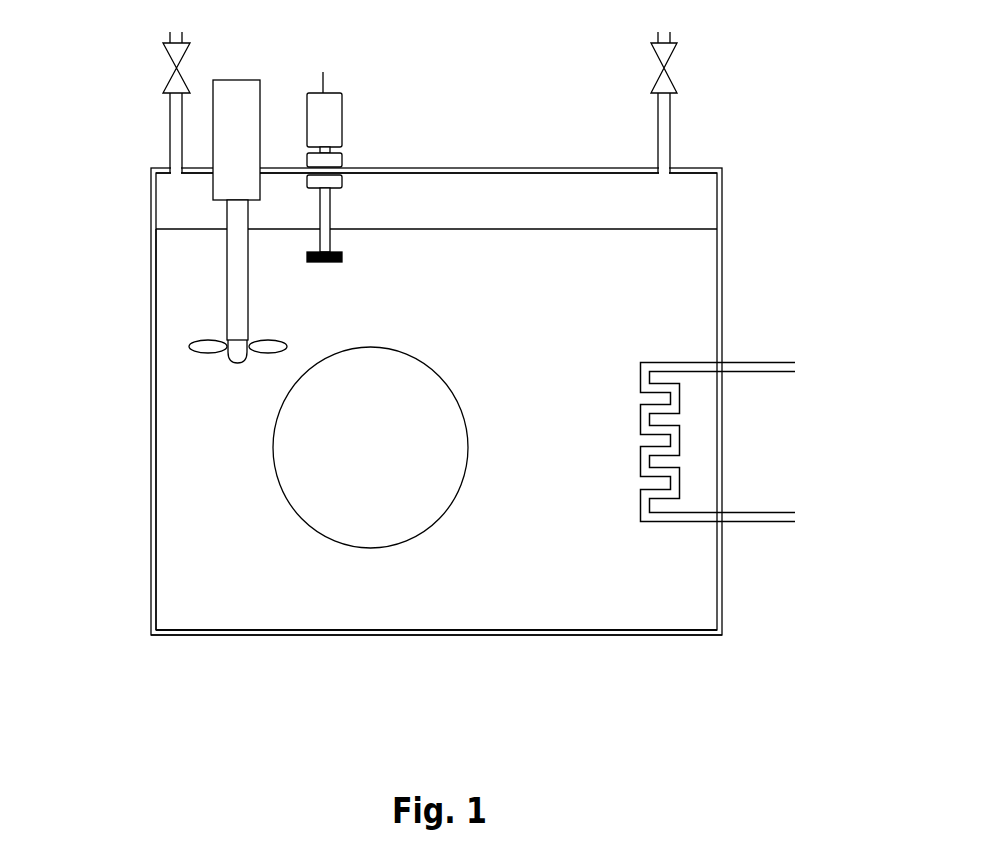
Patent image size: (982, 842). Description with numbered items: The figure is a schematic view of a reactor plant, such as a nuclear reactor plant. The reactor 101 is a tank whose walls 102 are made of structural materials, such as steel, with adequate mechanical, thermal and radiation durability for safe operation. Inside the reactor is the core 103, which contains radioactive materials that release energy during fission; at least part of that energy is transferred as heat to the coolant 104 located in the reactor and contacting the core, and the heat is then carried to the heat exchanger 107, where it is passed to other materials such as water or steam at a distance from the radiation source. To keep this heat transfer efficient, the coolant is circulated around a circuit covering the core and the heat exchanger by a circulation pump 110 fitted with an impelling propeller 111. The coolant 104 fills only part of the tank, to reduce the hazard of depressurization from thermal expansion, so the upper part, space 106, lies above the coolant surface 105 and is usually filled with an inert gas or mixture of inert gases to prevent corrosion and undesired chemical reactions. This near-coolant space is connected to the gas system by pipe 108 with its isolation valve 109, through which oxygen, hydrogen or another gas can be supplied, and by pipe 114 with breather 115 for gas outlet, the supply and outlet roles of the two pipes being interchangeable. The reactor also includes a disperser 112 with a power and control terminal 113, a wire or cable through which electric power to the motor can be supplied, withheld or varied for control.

The reactor 101 is at (733, 177).
The walls 102 is at (515, 633).
The core 103 is at (388, 482).
The coolant 104 is at (212, 417).
The surface 105 is at (188, 230).
The space above coolant 106 is at (175, 200).
The heat exchanger 107 is at (672, 515).
The pipe 108 is at (168, 132).
The isolation valve 109 is at (170, 83).
The circulation pump 110 is at (296, 58).
The impelling propeller 111 is at (205, 347).
The disperser 112 is at (327, 213).
The power and control terminal 113 is at (323, 83).
The pipe 114 is at (660, 133).
The breather 115 is at (657, 83).